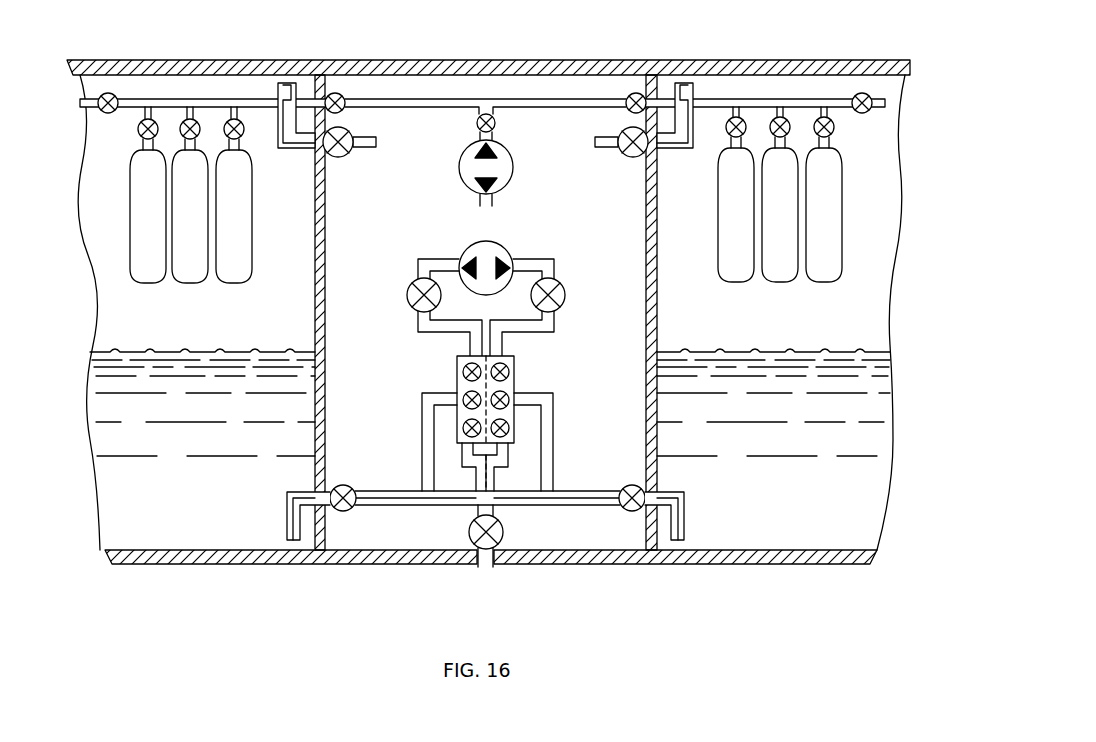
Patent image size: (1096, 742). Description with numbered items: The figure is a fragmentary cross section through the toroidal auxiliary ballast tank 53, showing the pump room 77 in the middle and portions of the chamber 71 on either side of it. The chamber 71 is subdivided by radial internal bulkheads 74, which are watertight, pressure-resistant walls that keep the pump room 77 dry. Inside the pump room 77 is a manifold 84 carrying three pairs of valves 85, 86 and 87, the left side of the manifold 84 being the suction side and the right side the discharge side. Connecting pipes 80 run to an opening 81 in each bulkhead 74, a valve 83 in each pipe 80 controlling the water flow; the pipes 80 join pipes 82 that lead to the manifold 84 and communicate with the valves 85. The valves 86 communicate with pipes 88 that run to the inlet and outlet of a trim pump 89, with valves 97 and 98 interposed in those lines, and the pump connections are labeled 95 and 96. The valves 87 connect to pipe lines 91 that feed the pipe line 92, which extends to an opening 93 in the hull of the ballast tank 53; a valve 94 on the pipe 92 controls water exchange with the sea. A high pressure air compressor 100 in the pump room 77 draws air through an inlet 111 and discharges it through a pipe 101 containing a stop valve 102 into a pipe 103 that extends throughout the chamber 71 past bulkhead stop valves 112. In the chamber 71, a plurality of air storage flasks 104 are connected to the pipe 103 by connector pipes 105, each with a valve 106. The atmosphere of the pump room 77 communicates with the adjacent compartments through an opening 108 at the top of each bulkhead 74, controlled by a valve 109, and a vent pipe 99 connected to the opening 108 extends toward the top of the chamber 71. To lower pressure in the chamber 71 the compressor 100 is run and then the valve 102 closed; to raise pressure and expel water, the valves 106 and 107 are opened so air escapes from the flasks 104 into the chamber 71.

The toroidal auxiliary ballast tank 53 is at (819, 57).
The chamber 71 is at (776, 331).
The radial internal bulkheads 74 is at (310, 270).
The pump room 77 is at (394, 205).
The connecting pipes 80 is at (400, 490).
The opening 81 is at (300, 493).
The pipes 82 is at (420, 412).
The valve 83 is at (351, 510).
The manifold 84 is at (531, 418).
The valves 85 is at (463, 395).
The valves 86 is at (463, 367).
The valves 87 is at (463, 430).
The pipes 88 is at (416, 324).
The trim pump 89 is at (508, 246).
The pipe lines 91 is at (463, 457).
The pipe line 92 is at (478, 509).
The opening 93 is at (493, 563).
The valve 94 is at (503, 532).
The pipe 95 is at (436, 258).
The pipe 96 is at (550, 258).
The valve 97 is at (407, 295).
The valve 98 is at (565, 296).
The pipe 99 is at (258, 100).
The high pressure air compressor 100 is at (514, 169).
The pipe 101 is at (476, 114).
The valve 102 is at (496, 124).
The pipe 103 is at (522, 99).
The air storage flasks 104 is at (212, 300).
The connector pipes 105 is at (140, 148).
The valve 106 is at (138, 130).
The valve 107 is at (113, 94).
The opening 108 is at (307, 146).
The valve 109 is at (353, 131).
The inlet 111 is at (484, 207).
The bulkhead stop valves 112 is at (344, 96).